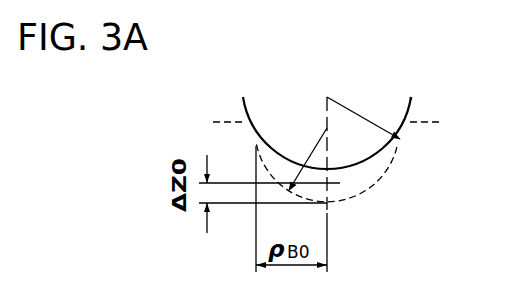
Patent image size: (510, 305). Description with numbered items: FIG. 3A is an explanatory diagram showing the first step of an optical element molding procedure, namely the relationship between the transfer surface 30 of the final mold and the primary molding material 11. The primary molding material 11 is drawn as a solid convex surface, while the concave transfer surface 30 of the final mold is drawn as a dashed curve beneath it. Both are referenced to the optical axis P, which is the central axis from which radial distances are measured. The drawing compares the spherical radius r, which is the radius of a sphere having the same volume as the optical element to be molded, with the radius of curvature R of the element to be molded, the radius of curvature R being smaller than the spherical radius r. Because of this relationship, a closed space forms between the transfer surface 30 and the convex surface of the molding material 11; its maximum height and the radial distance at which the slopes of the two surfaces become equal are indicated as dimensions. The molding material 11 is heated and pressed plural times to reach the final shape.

The primary molding material 11 is at (411, 100).
The transfer surface of final mold 30 is at (355, 200).
The optical axis P is at (327, 167).
The spherical radius r is at (364, 118).
The radius of curvature R is at (305, 159).